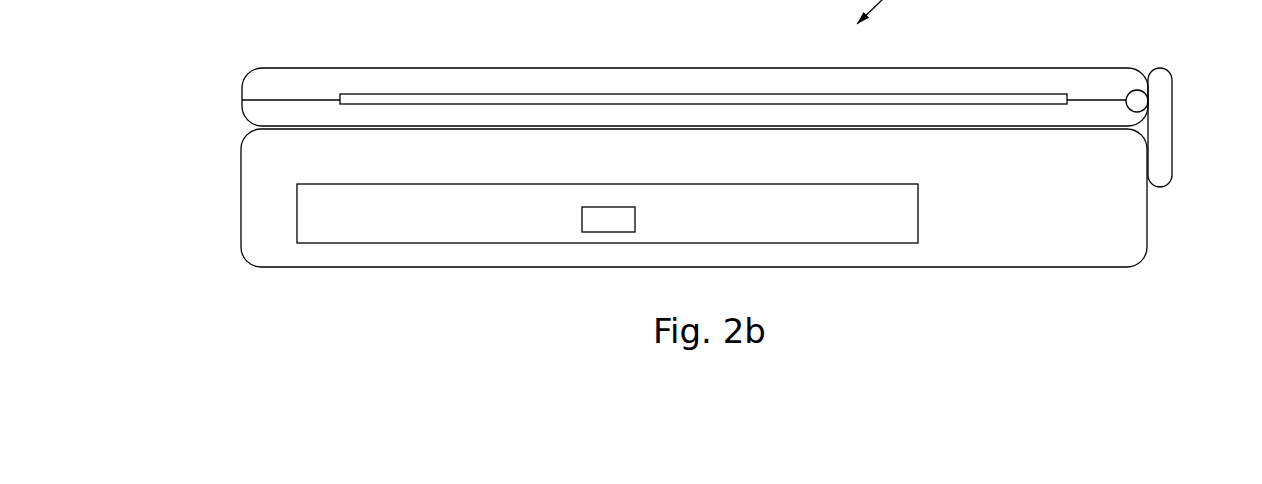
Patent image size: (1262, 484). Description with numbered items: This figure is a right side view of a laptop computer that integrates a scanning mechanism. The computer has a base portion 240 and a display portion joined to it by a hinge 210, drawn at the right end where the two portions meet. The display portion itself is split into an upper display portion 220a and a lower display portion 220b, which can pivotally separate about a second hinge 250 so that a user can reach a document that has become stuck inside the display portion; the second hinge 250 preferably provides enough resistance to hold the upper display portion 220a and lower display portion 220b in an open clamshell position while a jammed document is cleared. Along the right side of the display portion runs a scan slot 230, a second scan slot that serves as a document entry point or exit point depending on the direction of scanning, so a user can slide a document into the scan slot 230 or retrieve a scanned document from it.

The hinge 210 is at (1162, 129).
The upper display portion 220a is at (297, 78).
The lower display portion 220b is at (245, 113).
The scan slot 230 is at (377, 102).
The base portion 240 is at (805, 259).
The second hinge 250 is at (1140, 101).